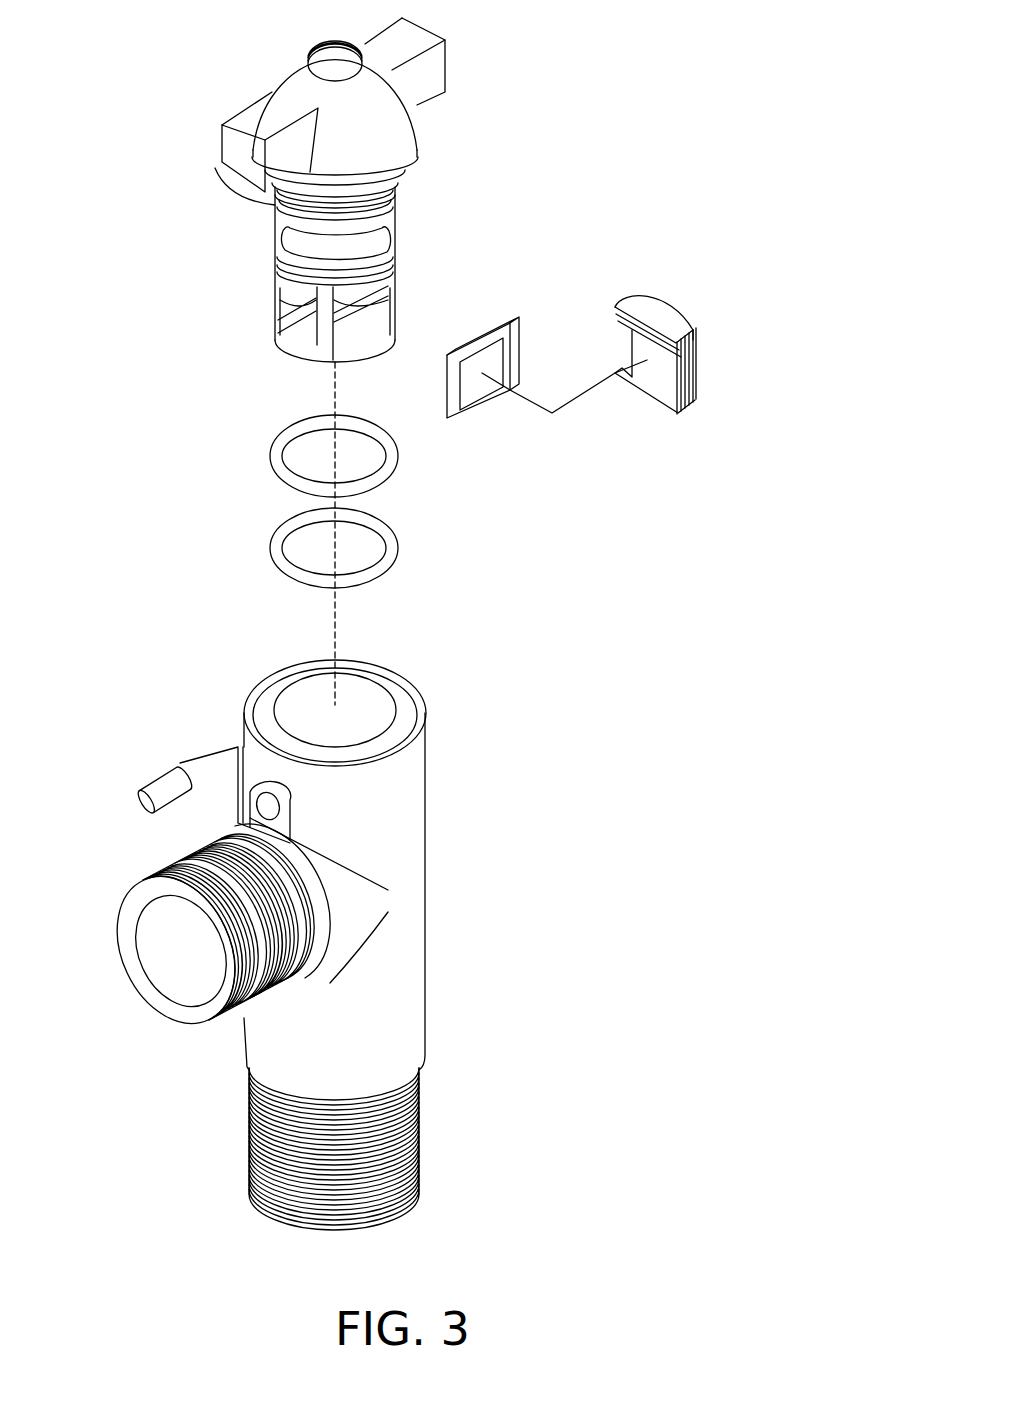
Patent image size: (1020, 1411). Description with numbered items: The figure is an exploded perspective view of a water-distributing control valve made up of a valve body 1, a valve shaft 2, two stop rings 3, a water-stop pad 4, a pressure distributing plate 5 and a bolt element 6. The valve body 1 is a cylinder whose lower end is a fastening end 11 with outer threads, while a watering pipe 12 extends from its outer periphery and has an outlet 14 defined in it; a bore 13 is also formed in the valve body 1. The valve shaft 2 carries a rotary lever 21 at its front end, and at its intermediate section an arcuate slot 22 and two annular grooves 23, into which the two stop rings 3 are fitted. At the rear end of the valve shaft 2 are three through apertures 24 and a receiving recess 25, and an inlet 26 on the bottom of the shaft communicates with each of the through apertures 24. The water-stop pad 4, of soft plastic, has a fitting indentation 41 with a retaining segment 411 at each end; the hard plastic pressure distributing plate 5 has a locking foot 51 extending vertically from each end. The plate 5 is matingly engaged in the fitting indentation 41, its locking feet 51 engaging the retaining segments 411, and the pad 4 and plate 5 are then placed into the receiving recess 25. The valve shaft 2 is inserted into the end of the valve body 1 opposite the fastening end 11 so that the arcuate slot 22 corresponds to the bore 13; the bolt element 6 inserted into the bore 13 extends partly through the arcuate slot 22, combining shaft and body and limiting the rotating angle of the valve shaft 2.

The valve body 1 is at (440, 930).
The fastening end 11 is at (423, 1170).
The watering pipe 12 is at (143, 965).
The bore 13 is at (263, 780).
The outlet 14 is at (217, 823).
The valve shaft 2 is at (288, 407).
The rotary lever 21 is at (455, 60).
The arcuate slot 22 is at (305, 243).
The annular grooves 23 is at (275, 203).
The through apertures 24 is at (297, 327).
The receiving recess 25 is at (360, 323).
The inlet 26 is at (317, 302).
The stop rings 3 is at (262, 436).
The water-stop pad 4 is at (672, 310).
The fitting indentation 41 is at (632, 353).
The retaining segment 411 is at (698, 395).
The pressure distributing plate 5 is at (547, 354).
The locking foot 51 is at (460, 413).
The bolt element 6 is at (153, 768).